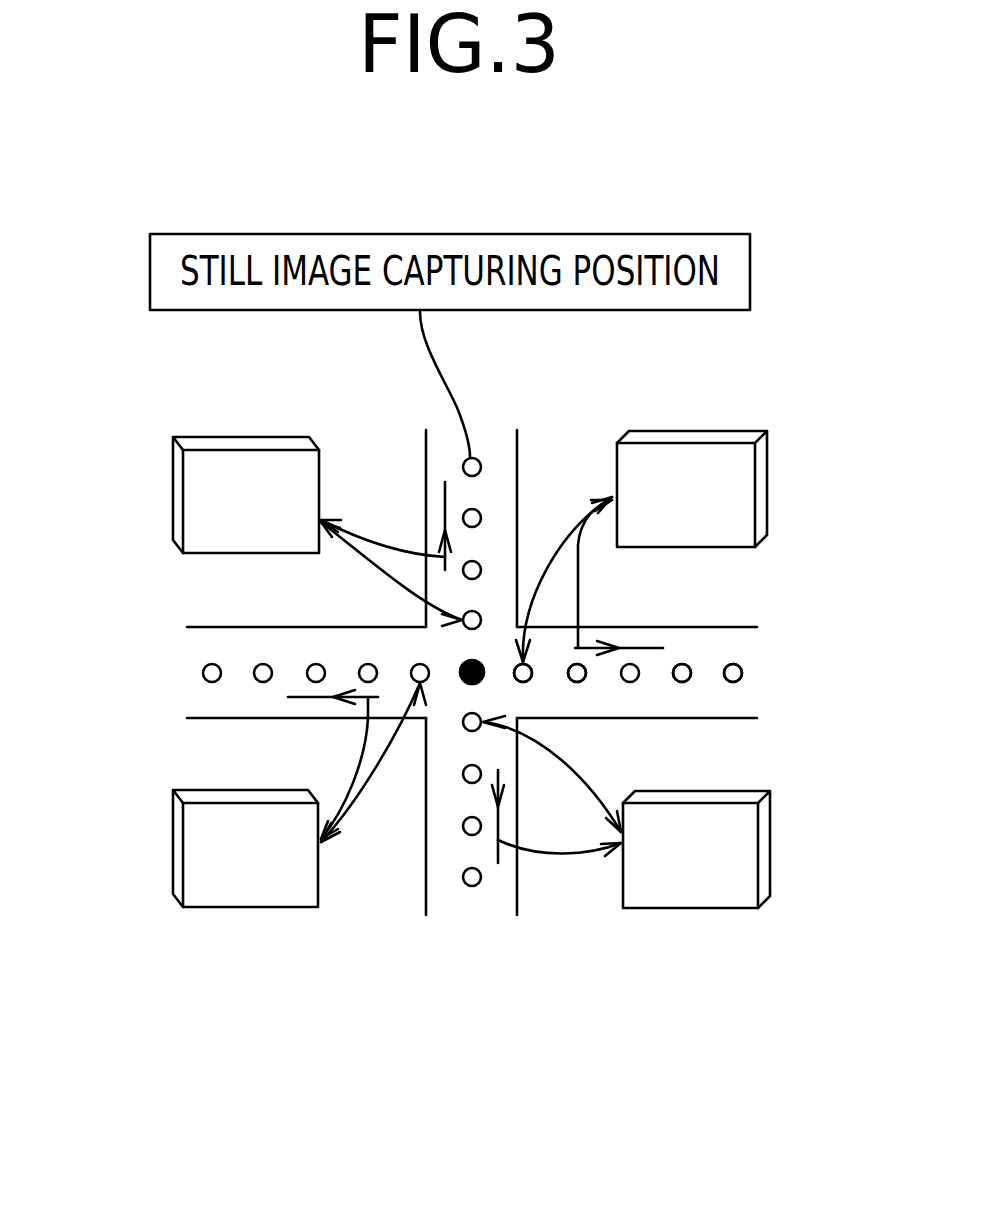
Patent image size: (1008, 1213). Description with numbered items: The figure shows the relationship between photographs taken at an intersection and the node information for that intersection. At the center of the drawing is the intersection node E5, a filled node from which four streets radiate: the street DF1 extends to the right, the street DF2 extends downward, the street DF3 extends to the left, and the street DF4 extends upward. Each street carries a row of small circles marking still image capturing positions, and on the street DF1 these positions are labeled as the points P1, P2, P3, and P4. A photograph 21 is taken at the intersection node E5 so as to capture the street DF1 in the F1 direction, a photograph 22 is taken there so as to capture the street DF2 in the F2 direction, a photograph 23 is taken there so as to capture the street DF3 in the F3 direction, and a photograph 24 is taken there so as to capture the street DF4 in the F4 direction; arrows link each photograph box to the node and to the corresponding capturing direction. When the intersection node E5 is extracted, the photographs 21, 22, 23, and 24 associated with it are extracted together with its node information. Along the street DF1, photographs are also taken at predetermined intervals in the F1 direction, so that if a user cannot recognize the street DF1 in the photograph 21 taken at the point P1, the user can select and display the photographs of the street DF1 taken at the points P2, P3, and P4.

The street DF1 is at (725, 648).
The street DF2 is at (445, 893).
The street DF3 is at (200, 652).
The street DF4 is at (502, 425).
The direction F1 is at (645, 648).
The direction F2 is at (578, 792).
The direction F3 is at (303, 697).
The direction F4 is at (442, 500).
The point P1 is at (528, 680).
The point P2 is at (582, 680).
The point P3 is at (688, 680).
The point P4 is at (740, 680).
The intersection node E5 is at (466, 685).
The photograph 21 is at (641, 546).
The photograph 22 is at (626, 812).
The photograph 23 is at (299, 795).
The photograph 24 is at (317, 531).